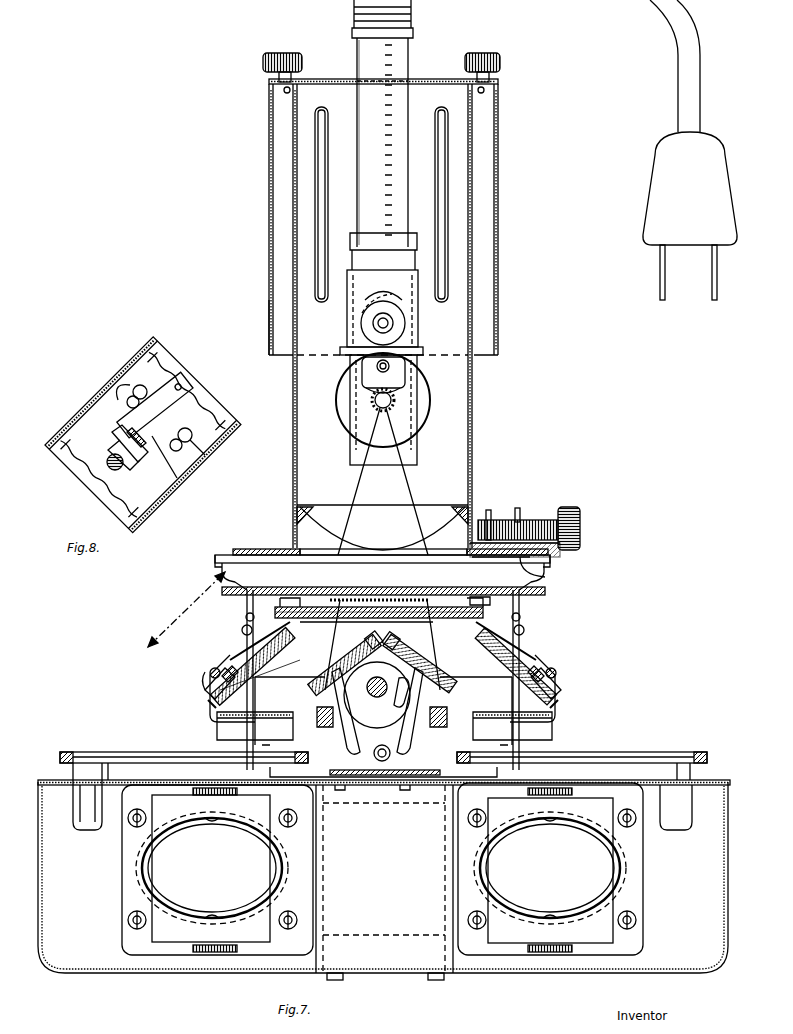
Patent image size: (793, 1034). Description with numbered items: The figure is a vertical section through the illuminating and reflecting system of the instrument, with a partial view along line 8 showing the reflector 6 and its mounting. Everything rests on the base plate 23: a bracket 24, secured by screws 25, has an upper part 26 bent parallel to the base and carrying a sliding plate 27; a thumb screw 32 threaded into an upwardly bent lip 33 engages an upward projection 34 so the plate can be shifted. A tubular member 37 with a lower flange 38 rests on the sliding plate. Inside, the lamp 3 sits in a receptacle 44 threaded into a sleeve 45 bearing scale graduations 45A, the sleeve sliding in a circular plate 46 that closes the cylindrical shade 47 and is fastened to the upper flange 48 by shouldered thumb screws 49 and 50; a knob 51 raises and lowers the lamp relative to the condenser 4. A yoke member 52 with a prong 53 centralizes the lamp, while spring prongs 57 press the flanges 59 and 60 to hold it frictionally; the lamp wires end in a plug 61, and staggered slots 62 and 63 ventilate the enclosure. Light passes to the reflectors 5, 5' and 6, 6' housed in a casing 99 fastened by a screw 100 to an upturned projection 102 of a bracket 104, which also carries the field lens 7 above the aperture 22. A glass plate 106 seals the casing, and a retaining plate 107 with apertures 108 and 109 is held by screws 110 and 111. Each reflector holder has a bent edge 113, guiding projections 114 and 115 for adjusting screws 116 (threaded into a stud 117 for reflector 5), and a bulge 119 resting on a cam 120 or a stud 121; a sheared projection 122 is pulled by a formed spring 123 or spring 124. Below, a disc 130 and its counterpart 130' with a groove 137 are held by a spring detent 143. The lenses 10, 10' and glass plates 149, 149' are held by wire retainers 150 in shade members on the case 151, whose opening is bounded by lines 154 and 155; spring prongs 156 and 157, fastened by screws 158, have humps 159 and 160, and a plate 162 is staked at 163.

In FIG. 7, the lamp 3 is at (346, 418).
In FIG. 7, the condenser 4 is at (338, 505).
In FIG. 7, the reflector 5 is at (345, 662).
In FIG. 7, the reflector 5' is at (420, 661).
In FIG. 7, the reflector 6 is at (256, 666).
In FIG. 7, the reflector 6' is at (511, 666).
In FIG. 7, the field lens 7 is at (268, 710).
In FIG. 7, the section line 8— 8 is at (172, 599).
In FIG. 7, the lens 10 is at (189, 868).
In FIG. 7, the lens 10' is at (515, 868).
In FIG. 7, the aperture 22 is at (230, 727).
In FIG. 7, the base plate 23 is at (48, 780).
In FIG. 7, the bracket 24 is at (262, 752).
In FIG. 7, the screws 25 is at (360, 790).
In FIG. 7, the upper part of bracket 26 is at (228, 552).
In FIG. 7, the sliding plate 27 is at (262, 549).
In FIG. 7, the thumb screw 32 is at (580, 521).
In FIG. 7, the upwardly bent lip 33 is at (520, 510).
In FIG. 7, the upward projection 34 is at (489, 512).
In FIG. 7, the tubular member 37 is at (293, 425).
In FIG. 7, the flange 38 is at (290, 549).
In FIG. 7, the receptacle 44 is at (345, 352).
In FIG. 7, the sleeve 45 is at (357, 172).
In FIG. 7, the scale graduations 45A is at (400, 105).
In FIG. 7, the circular plate 46 is at (330, 80).
In FIG. 7, the cylindrical shade 47 is at (270, 325).
In FIG. 7, the upper flange 48 is at (290, 93).
In FIG. 7, the shouldered thumb screw 49 is at (266, 54).
In FIG. 7, the shouldered thumb screw 50 is at (500, 54).
In FIG. 7, the knob 51 is at (414, 20).
In FIG. 7, the yoke member 52 is at (352, 245).
In FIG. 7, the prong 53 is at (352, 456).
In FIG. 7, the prongs 57 is at (362, 297).
In FIG. 7, the flange 59 is at (355, 380).
In FIG. 7, the flange 60 is at (415, 387).
In FIG. 7, the plug 61 is at (648, 218).
In FIG. 7, the vertical staggered slot 62 is at (329, 210).
In FIG. 7, the vertical staggered slot 63 is at (270, 210).
In FIG. 7, the casing 99 is at (206, 687).
In FIG. 7, the screw 100 is at (387, 746).
In FIG. 7, the upturned projection 102 is at (380, 757).
In FIG. 7, the bracket 104 is at (376, 765).
In FIG. 7, the transparent glass plate 106 is at (330, 607).
In FIG. 7, the retaining plate 107 is at (388, 607).
In FIG. 7, the aperture 108 is at (338, 607).
In FIG. 7, the aperture 109 is at (438, 607).
In FIG. 7, the screw 110 is at (262, 588).
In FIG. 7, the screw 111 is at (473, 600).
In FIG. 7, the bent edge 113 is at (380, 645).
In FIG. 8, the bent edge 113 is at (58, 456).
In FIG. 7, the sheared parallel projections 114 is at (242, 630).
In FIG. 8, the sheared parallel projections 114 is at (118, 382).
In FIG. 8, the sheared parallel projections 115 is at (198, 462).
In FIG. 7, the adjusting screws 116 is at (246, 620).
In FIG. 8, the adjusting screws 116 is at (168, 388).
In FIG. 7, the stud 117 is at (333, 735).
In FIG. 7, the bulge 119 is at (360, 652).
In FIG. 7, the cam 120 is at (388, 707).
In FIG. 7, the stud 121 is at (210, 672).
In FIG. 8, the stud 121 is at (108, 466).
In FIG. 7, the sheared projection 122 is at (360, 692).
In FIG. 8, the sheared projection 122 is at (150, 495).
In FIG. 7, the formed spring 123 is at (330, 688).
In FIG. 7, the spring 124 is at (225, 675).
In FIG. 8, the spring 124 is at (177, 480).
In FIG. 7, the disc 130 is at (384, 761).
In FIG. 7, the disc 130' is at (582, 759).
In FIG. 7, the groove 137 is at (108, 752).
In FIG. 7, the spring detent 143 is at (75, 825).
In FIG. 7, the transparent glass plate 149 is at (249, 868).
In FIG. 7, the transparent glass plate 149' is at (581, 868).
In FIG. 7, the arcuate spring wire retainers 150 is at (228, 822).
In FIG. 7, the case 151 is at (38, 850).
In FIG. 7, the opening line 154 is at (380, 805).
In FIG. 7, the opening line 155 is at (395, 935).
In FIG. 7, the prong 156 is at (165, 786).
In FIG. 7, the prong 157 is at (165, 950).
In FIG. 7, the screw 158 is at (128, 820).
In FIG. 7, the arcuate hump 159 is at (215, 786).
In FIG. 7, the arcuate hump 160 is at (220, 953).
In FIG. 7, the plate 162 is at (318, 851).
In FIG. 7, the staking 163 is at (430, 979).